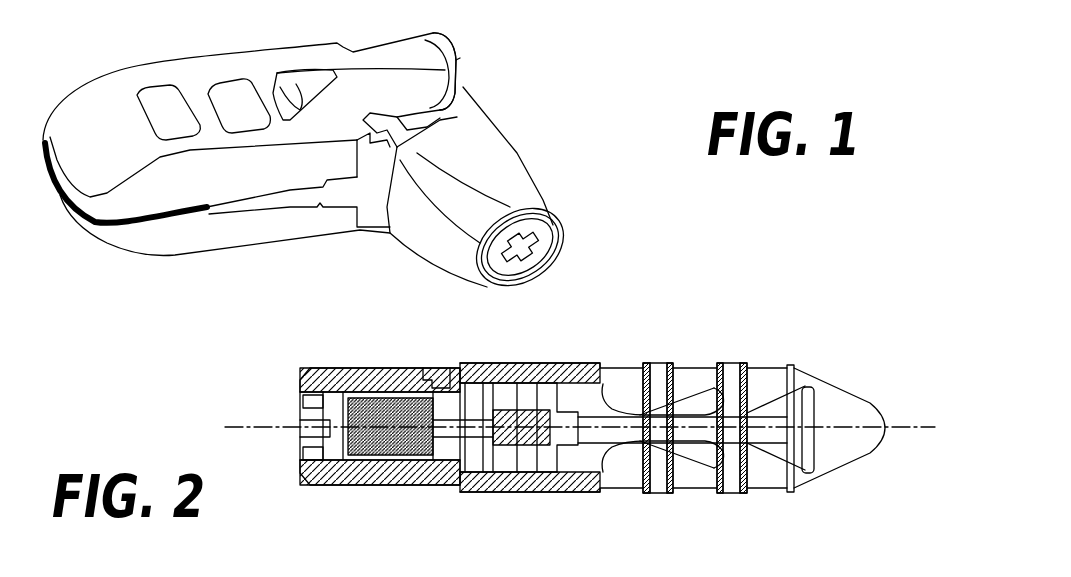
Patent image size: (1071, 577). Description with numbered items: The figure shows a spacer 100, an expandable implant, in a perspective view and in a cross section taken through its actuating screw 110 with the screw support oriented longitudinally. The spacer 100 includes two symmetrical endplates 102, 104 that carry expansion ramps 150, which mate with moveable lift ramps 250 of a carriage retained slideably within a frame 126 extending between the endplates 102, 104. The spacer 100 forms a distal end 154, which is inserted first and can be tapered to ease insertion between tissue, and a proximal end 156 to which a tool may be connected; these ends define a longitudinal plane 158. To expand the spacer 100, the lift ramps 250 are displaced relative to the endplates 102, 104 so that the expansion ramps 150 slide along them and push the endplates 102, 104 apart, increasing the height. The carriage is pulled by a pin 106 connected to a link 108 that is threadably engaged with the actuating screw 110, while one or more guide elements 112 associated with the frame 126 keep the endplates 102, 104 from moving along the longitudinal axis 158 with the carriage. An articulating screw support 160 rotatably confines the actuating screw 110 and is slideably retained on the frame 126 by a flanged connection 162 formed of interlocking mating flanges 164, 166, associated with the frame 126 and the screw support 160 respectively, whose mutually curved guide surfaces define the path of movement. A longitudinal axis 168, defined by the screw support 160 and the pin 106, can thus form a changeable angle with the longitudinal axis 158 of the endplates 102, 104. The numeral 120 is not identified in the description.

In FIG. 1, the spacer 100 is at (204, 256).
In FIG. 2, the spacer 100 is at (296, 396).
In FIG. 1, the endplate 102 is at (85, 155).
In FIG. 2, the endplate 102 is at (772, 376).
In FIG. 1, the endplate 104 is at (137, 242).
In FIG. 2, the endplate 104 is at (617, 484).
In FIG. 1, the pin 106 is at (187, 127).
In FIG. 2, the link 108 is at (495, 487).
In FIG. 1, the actuating screw 110 is at (547, 253).
In FIG. 2, the actuating screw 110 is at (367, 452).
In FIG. 1, the guide element 112 is at (473, 123).
In FIG. 2, the piston 120 is at (500, 576).
In FIG. 1, the frame 126 is at (327, 199).
In FIG. 2, the frame 126 is at (406, 376).
In FIG. 1, the expansion ramp 150 is at (276, 100).
In FIG. 2, the expansion ramp 150 is at (806, 576).
In FIG. 2, the distal end 154 is at (878, 400).
In FIG. 2, the proximal end 156 is at (508, 345).
In FIG. 2, the longitudinal plane 158 is at (905, 436).
In FIG. 1, the articulating screw support 160 is at (535, 162).
In FIG. 2, the articulating screw support 160 is at (333, 477).
In FIG. 1, the flanged connection 162 is at (505, 42).
In FIG. 2, the flanged connection 162 is at (455, 350).
In FIG. 2, the mating flange 164 is at (473, 368).
In FIG. 2, the mating flange 166 is at (437, 375).
In FIG. 2, the longitudinal axis 168 is at (259, 433).
In FIG. 1, the lift ramp 250 is at (478, 80).
In FIG. 2, the lift ramp 250 is at (719, 565).